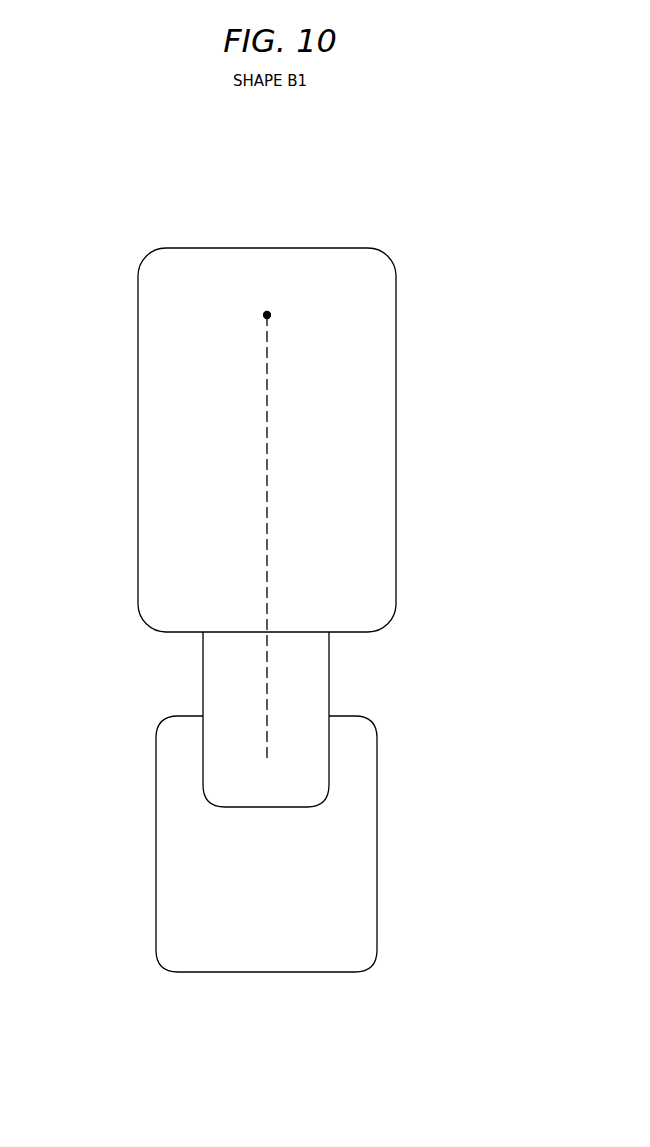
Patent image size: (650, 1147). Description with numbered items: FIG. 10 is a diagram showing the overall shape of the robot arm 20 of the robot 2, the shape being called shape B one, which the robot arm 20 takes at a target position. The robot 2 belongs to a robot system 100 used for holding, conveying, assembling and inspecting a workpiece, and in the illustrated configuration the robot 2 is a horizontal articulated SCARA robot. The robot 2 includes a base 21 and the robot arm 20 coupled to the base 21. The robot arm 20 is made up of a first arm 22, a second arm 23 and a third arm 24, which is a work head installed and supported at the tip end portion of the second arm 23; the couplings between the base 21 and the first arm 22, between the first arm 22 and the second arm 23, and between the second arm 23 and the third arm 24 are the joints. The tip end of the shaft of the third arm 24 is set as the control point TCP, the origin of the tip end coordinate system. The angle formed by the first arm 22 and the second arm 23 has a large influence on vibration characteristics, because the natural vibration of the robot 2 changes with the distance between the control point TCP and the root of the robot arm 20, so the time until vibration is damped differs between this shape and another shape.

The robot system 100 is at (405, 181).
The robot 2 is at (207, 232).
The robot arm 20 is at (458, 358).
The base 21 is at (377, 836).
The first arm 22 is at (329, 677).
The second arm 23 is at (396, 421).
The third arm 24 is at (264, 314).
The control point TCP is at (268, 312).